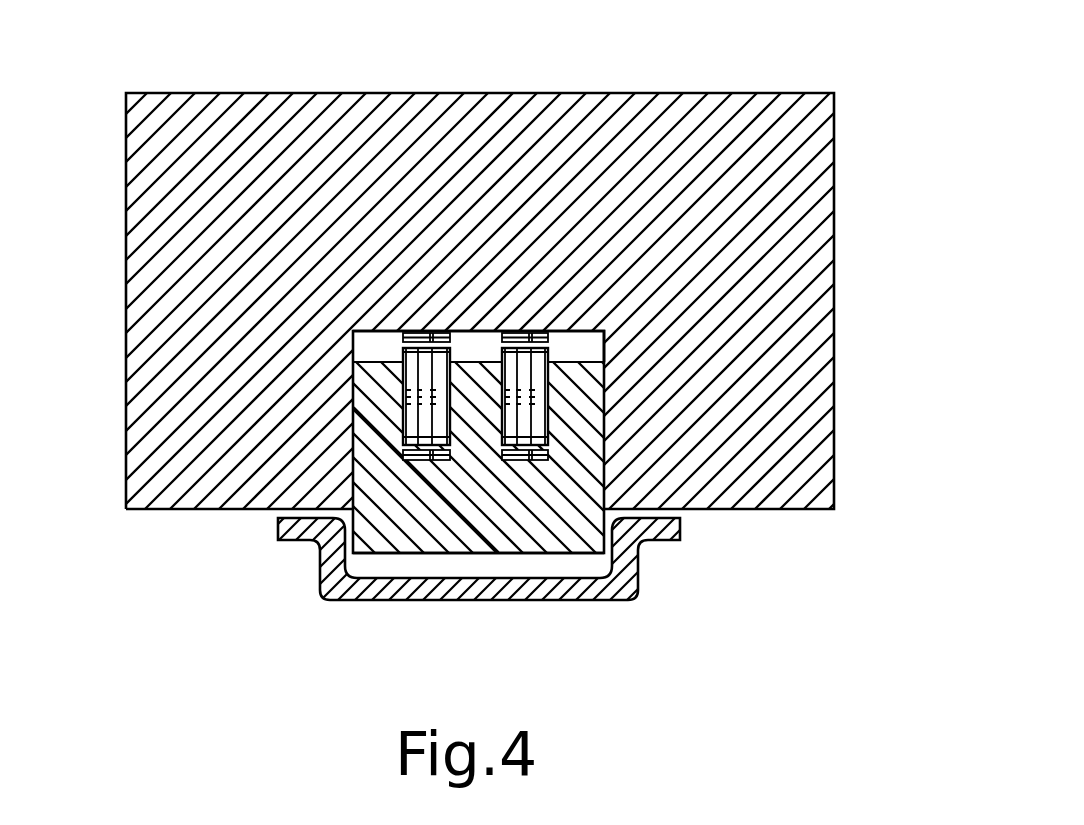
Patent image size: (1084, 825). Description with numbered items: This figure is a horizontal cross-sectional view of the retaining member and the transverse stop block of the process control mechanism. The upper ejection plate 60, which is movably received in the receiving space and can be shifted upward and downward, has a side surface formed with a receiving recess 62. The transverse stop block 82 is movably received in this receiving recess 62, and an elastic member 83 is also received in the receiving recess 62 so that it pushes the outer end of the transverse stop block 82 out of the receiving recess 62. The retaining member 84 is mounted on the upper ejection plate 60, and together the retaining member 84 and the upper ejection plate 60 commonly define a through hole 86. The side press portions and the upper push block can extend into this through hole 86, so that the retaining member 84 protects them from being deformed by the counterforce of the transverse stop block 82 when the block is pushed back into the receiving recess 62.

The upper ejection plate 60 is at (203, 303).
The receiving recess 62 is at (470, 345).
The transverse stop block 82 is at (583, 468).
The elastic member 83 is at (583, 326).
The retaining member 84 is at (580, 590).
The through hole 86 is at (438, 564).